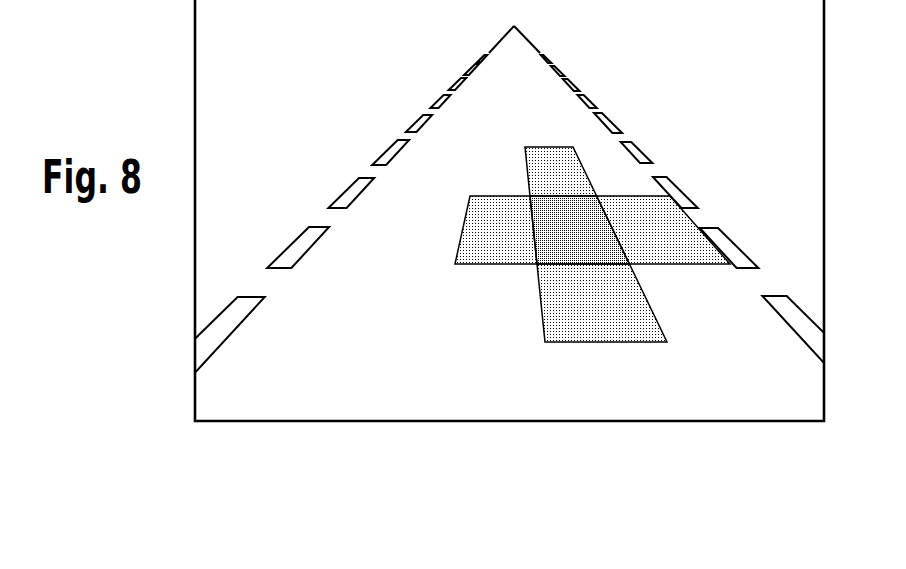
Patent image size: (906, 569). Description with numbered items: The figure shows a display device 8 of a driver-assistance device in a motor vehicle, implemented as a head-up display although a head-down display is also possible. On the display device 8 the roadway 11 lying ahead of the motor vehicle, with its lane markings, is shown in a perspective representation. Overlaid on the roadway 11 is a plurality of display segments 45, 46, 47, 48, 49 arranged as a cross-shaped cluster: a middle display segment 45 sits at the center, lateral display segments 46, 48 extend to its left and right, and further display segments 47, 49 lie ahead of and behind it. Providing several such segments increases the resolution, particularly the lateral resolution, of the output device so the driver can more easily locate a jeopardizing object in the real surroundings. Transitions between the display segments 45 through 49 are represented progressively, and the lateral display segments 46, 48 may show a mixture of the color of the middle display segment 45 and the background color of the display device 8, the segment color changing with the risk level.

The display device 8 is at (655, 452).
The roadway 11 is at (357, 355).
The middle display segment 45 is at (575, 222).
The lateral display segment 46 is at (488, 230).
The display segment 47 is at (548, 168).
The lateral display segment 48 is at (657, 235).
The display segment 49 is at (588, 305).